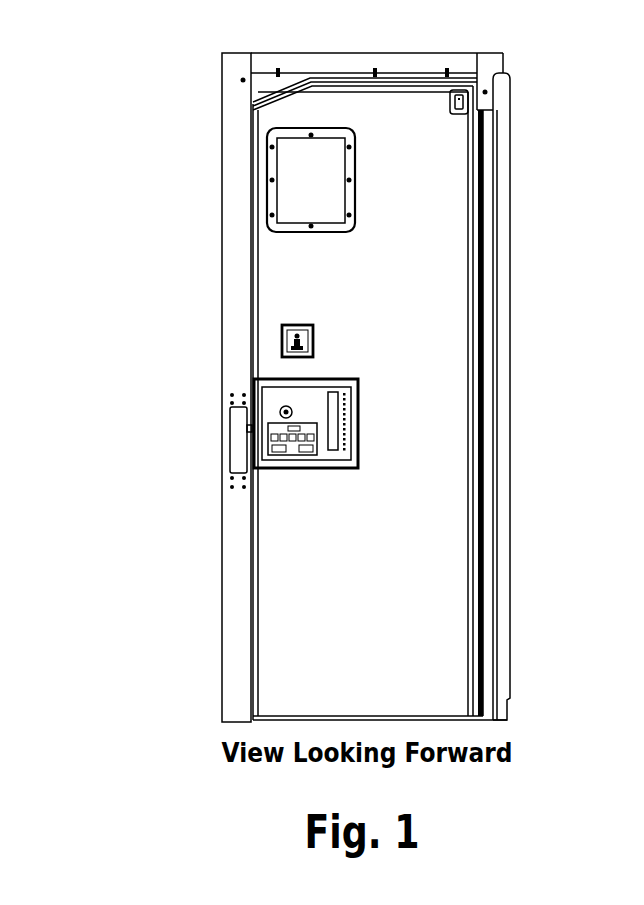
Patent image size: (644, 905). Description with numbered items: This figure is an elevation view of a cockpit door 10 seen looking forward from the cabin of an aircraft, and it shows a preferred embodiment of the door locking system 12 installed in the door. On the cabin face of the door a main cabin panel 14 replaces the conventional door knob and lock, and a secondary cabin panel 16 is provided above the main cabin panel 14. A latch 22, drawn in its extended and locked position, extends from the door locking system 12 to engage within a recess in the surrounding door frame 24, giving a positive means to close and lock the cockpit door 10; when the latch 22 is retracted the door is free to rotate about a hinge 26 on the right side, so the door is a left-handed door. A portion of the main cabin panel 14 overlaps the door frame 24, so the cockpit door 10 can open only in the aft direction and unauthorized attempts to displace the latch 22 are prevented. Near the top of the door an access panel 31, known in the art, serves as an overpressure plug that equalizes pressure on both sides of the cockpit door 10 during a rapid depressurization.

The cockpit door 10 is at (575, 160).
The door locking system 12 is at (355, 351).
The main cabin panel 14 is at (353, 377).
The secondary cabin panel 16 is at (313, 330).
The latch 22 is at (215, 441).
The door frame 24 is at (232, 82).
The hinge 26 is at (473, 530).
The access panel 31 is at (295, 192).